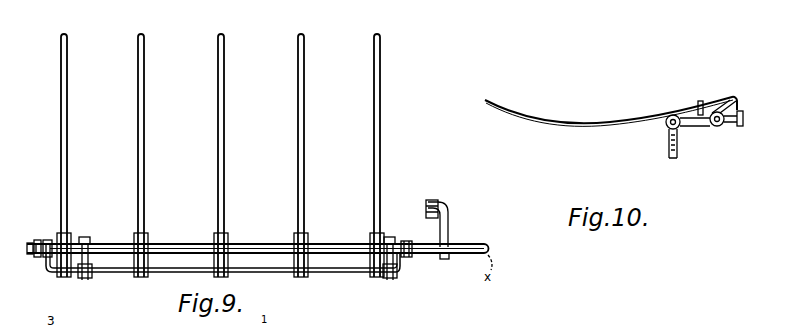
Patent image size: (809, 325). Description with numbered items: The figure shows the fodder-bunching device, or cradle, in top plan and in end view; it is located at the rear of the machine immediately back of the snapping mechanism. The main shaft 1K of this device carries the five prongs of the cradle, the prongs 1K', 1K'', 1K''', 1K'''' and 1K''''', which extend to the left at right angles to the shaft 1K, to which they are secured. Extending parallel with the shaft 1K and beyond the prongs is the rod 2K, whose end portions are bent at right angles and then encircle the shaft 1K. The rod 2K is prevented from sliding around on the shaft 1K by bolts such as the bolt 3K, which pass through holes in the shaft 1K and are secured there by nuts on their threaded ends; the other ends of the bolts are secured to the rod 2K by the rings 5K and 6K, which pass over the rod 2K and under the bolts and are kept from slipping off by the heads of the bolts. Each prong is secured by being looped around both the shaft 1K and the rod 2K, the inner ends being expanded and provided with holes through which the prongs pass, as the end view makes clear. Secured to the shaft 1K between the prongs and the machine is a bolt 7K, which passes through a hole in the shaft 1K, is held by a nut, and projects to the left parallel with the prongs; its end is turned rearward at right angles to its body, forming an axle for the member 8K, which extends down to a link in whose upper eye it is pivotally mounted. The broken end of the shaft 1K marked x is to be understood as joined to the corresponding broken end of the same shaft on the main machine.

In FIG. 9, the main shaft 1K is at (430, 282).
In FIG. 9, the prong 1K' is at (77, 155).
In FIG. 10, the prong 1K' is at (611, 128).
In FIG. 9, the prong 1K'' is at (156, 155).
In FIG. 9, the prong 1K''' is at (238, 155).
In FIG. 9, the prong 1K'''' is at (319, 155).
In FIG. 9, the prong 1K''''' is at (396, 155).
In FIG. 9, the rod 2K is at (331, 274).
In FIG. 10, the rod 2K is at (740, 103).
In FIG. 9, the bolt 3K is at (85, 279).
In FIG. 10, the bolt 3K is at (746, 120).
In FIG. 9, the ring 5K is at (79, 274).
In FIG. 9, the ring 6K is at (382, 276).
In FIG. 9, the bolt 7K is at (449, 228).
In FIG. 9, the member 8K is at (441, 202).